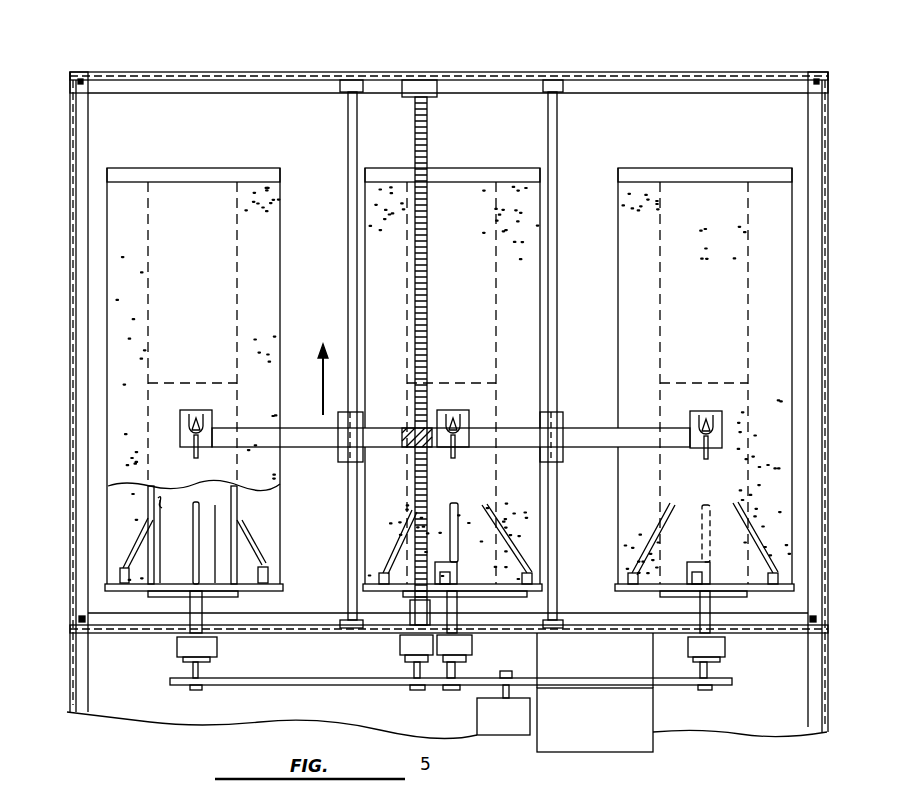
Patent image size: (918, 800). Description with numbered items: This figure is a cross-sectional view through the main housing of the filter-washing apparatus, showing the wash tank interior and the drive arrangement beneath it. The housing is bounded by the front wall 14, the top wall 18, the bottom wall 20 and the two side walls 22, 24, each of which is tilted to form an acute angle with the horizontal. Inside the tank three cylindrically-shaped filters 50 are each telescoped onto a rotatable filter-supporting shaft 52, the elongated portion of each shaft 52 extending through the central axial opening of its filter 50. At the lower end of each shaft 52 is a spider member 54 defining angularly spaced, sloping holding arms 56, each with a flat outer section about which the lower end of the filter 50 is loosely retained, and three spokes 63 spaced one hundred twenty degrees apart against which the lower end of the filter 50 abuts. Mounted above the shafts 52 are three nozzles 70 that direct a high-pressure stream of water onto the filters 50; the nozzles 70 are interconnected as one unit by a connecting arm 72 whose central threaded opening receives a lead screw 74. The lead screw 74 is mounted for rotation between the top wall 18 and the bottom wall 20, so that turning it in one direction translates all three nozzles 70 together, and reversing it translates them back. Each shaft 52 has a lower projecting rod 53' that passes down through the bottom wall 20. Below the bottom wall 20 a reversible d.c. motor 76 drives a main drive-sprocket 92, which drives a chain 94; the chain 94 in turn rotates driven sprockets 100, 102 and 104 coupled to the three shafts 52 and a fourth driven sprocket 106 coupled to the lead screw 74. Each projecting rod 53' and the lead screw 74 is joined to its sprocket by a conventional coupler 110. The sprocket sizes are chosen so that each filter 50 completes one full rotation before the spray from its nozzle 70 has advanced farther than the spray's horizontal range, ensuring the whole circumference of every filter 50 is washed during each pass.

The front wall 14 is at (640, 134).
The top wall 18 is at (611, 73).
The bottom wall 20 is at (783, 640).
The side wall 22 is at (70, 291).
The side wall 24 is at (829, 216).
The cylindrically-shaped filter 50 is at (171, 181).
The rotatable filter-supporting shaft 52 is at (213, 497).
The lower projecting rod 53' is at (491, 622).
The spider member 54 is at (130, 534).
The holding arm 56 is at (193, 513).
The spoke 63 is at (110, 592).
The nozzle 70 is at (197, 410).
The connecting arm 72 is at (586, 443).
The lead screw 74 is at (427, 144).
The reversible d.c. motor 76 is at (572, 722).
The main drive-sprocket 92 is at (516, 667).
The chain 94 is at (306, 685).
The driven sprocket 100 is at (197, 689).
The driven sprocket 102 is at (458, 691).
The driven sprocket 104 is at (706, 691).
The fourth driven sprocket 106 is at (395, 682).
The coupler 110 is at (178, 641).